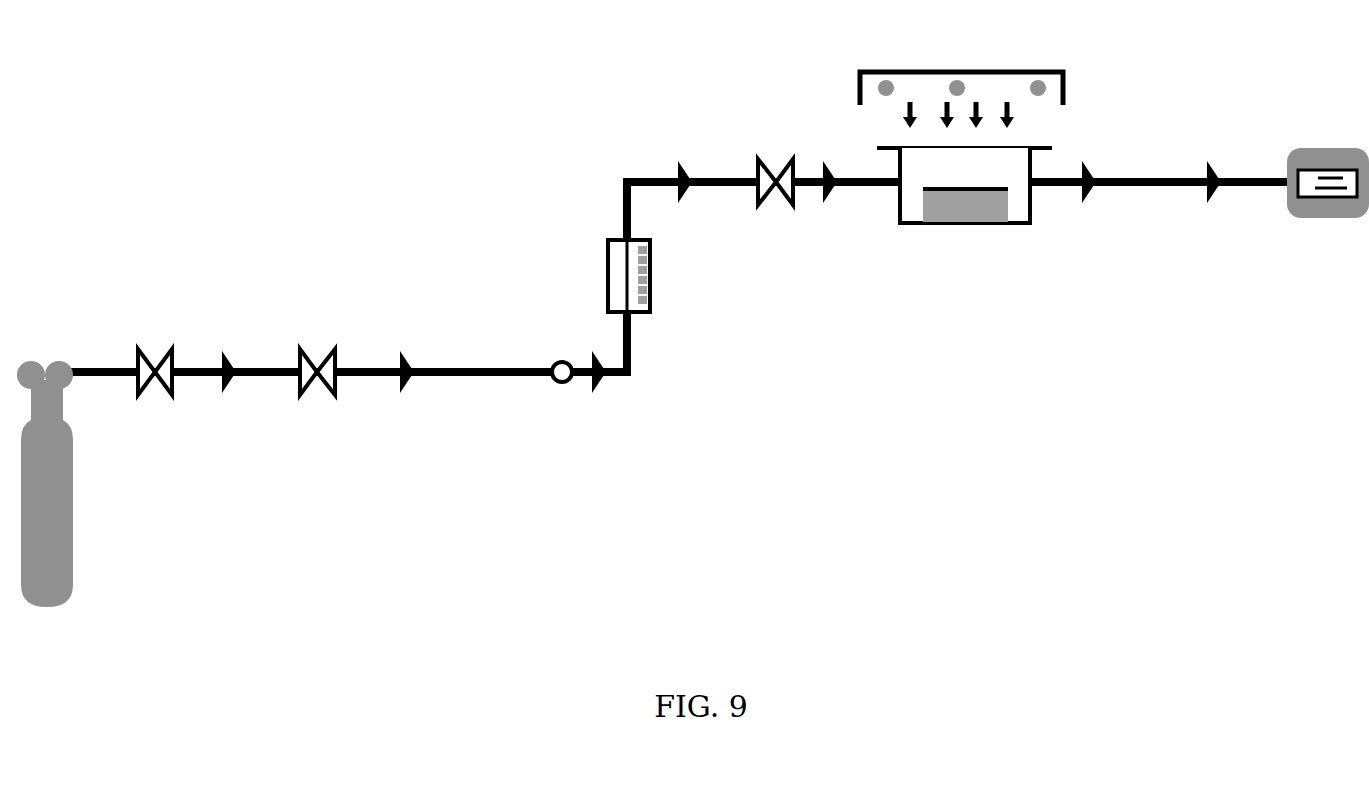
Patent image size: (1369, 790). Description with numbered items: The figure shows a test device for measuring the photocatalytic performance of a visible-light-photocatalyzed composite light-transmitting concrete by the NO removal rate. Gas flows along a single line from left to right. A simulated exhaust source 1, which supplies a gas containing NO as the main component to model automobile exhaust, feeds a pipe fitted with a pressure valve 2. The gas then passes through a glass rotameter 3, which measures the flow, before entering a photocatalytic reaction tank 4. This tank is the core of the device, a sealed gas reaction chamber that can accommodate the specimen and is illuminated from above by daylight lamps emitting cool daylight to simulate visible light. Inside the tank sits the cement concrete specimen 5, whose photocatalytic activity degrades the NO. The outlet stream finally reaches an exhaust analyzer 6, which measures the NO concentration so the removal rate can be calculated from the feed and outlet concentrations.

The simulated exhaust source 1 is at (62, 484).
The pressure valve 2 is at (317, 351).
The glass rotameter 3 is at (643, 276).
The photocatalytic reaction tank 4 is at (961, 76).
The cement concrete specimen 5 is at (965, 205).
The exhaust analyzer 6 is at (1328, 161).